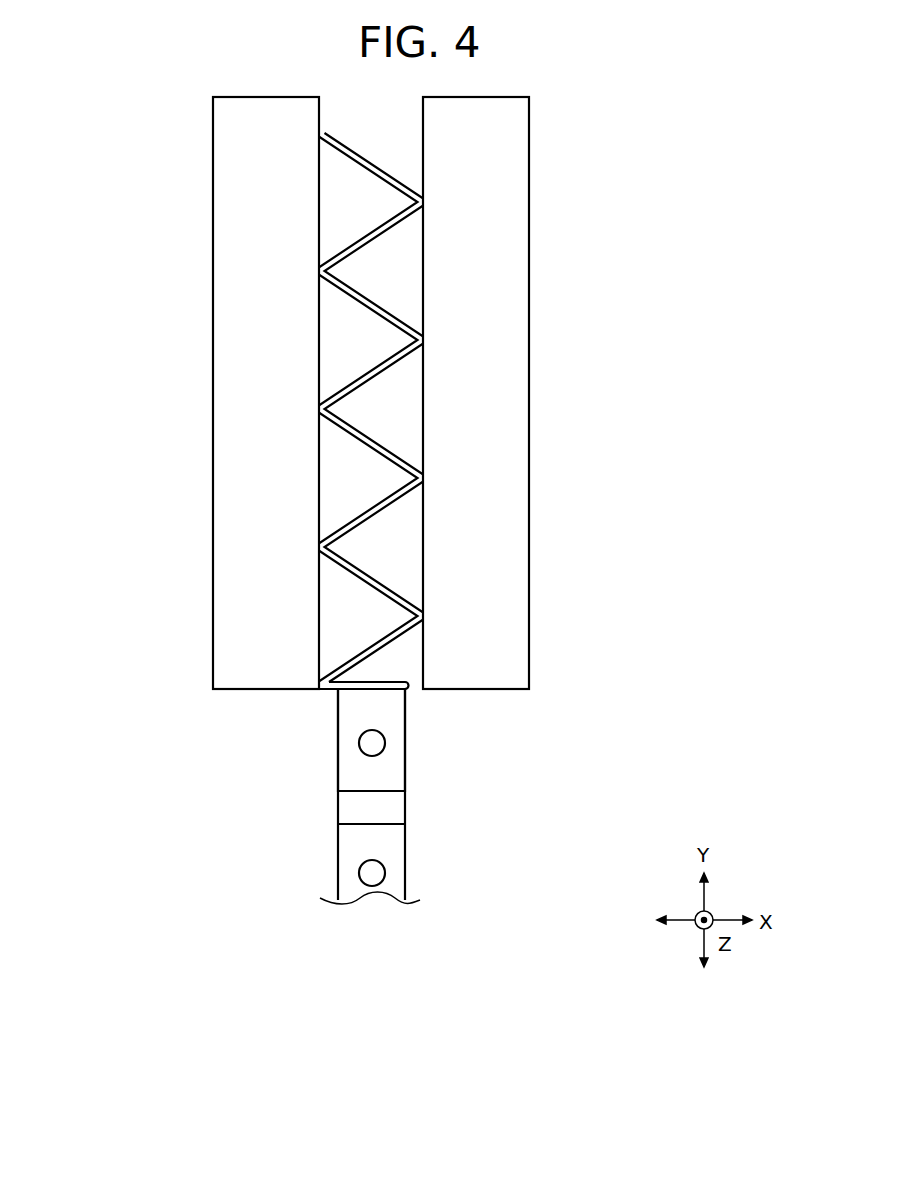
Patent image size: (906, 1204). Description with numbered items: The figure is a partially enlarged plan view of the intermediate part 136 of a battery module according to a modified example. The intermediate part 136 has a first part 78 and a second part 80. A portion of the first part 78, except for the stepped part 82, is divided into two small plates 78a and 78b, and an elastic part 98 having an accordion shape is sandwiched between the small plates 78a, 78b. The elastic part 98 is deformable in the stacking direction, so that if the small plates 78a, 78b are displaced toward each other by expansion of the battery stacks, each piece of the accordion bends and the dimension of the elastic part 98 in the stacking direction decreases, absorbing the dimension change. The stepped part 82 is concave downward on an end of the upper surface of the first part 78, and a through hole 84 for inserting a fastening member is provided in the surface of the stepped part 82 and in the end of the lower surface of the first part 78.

The first part 78 is at (373, 393).
The small plate 78a is at (213, 640).
The small plate 78b is at (529, 640).
The elastic part 98 is at (393, 222).
The second part 80 is at (361, 796).
The stepped part 82 is at (338, 713).
The through hole 84 is at (386, 741).
The intermediate part 136 is at (393, 1045).